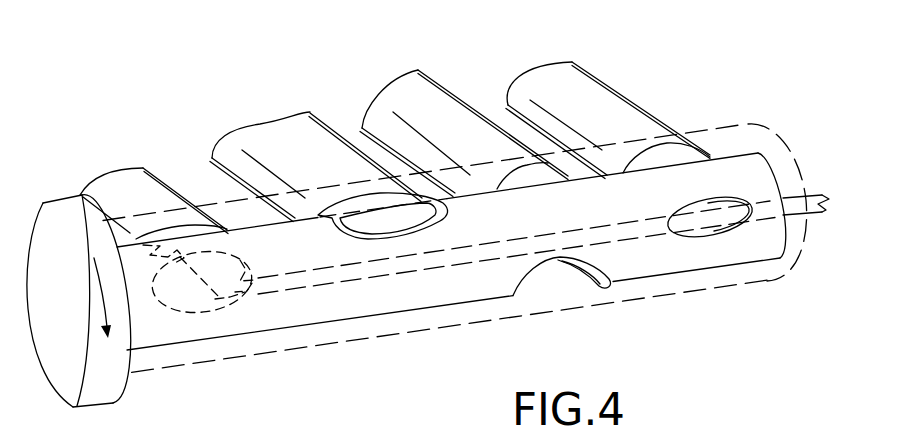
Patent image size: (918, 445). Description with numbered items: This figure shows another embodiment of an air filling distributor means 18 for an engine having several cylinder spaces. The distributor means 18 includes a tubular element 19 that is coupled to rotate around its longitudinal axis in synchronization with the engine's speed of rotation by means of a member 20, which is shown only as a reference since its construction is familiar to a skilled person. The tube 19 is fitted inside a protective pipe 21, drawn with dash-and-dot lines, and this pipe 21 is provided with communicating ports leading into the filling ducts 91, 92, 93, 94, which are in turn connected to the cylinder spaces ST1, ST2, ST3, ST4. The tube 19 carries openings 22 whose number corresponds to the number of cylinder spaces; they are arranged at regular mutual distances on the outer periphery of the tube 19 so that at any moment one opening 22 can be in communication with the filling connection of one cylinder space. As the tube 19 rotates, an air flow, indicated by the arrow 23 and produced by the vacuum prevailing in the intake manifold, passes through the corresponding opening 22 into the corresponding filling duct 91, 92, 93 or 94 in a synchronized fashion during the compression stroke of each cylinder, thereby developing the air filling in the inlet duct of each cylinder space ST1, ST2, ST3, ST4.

The distributor means 18 is at (421, 288).
The tubular element 19 is at (318, 306).
The member 20 is at (98, 388).
The protective pipe 21 is at (742, 129).
The openings 22 is at (437, 221).
The air flow 23 is at (285, 284).
The filling duct 91 is at (121, 146).
The filling duct 92 is at (270, 93).
The filling duct 93 is at (398, 54).
The filling duct 94 is at (557, 32).
The cylinder space ST1 is at (144, 178).
The cylinder space ST2 is at (315, 143).
The cylinder space ST3 is at (452, 112).
The cylinder space ST4 is at (602, 90).